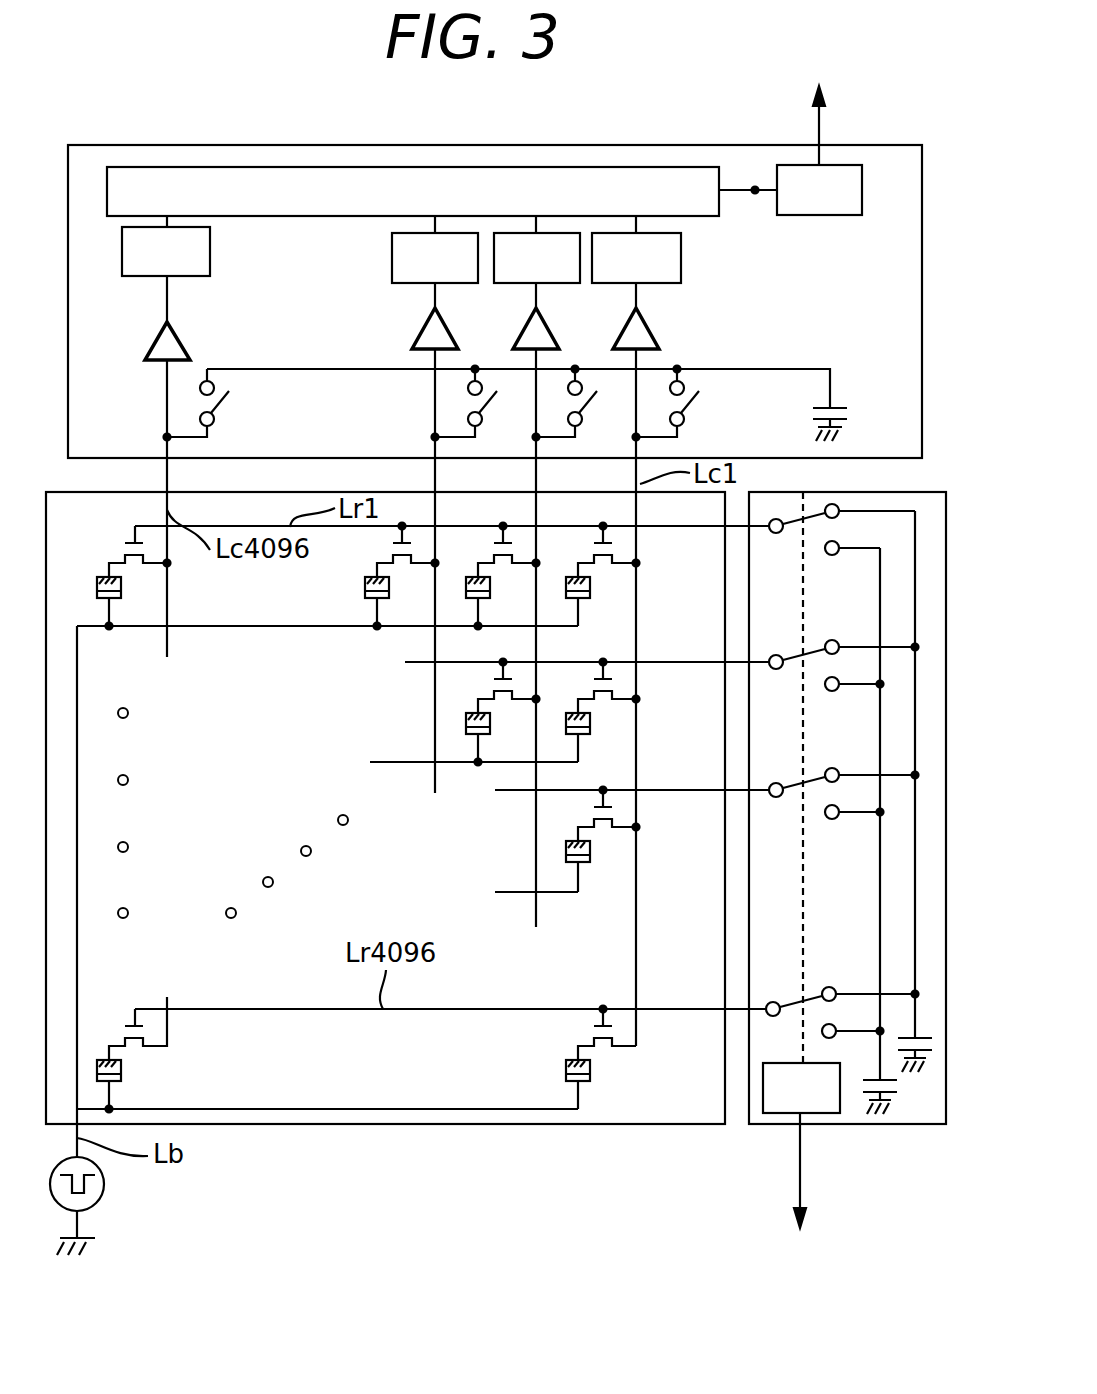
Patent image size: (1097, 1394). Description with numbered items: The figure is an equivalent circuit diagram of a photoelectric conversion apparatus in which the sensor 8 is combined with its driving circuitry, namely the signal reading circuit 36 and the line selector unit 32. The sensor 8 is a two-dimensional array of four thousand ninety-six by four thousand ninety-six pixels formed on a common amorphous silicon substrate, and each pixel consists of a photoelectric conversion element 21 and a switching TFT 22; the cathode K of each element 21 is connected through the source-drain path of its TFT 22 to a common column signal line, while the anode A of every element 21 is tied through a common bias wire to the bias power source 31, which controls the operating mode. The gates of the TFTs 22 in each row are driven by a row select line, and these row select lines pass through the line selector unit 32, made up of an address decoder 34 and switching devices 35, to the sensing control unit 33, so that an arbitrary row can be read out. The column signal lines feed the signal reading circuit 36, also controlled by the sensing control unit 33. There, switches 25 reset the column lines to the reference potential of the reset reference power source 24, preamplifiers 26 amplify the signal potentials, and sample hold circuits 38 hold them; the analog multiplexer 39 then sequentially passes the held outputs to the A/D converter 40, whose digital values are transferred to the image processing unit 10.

The sensor 8 is at (395, 1125).
The image processing unit 10 is at (833, 82).
The photoelectric conversion element 21 is at (102, 603).
The switching TFT 22 is at (140, 550).
The reset reference power source 24 is at (832, 405).
The switches 25 is at (225, 400).
The preamplifiers 26 is at (172, 345).
The bias power source 31 is at (104, 1183).
The line selector unit 32 is at (912, 1124).
The sensing control unit 33 is at (804, 1218).
The address decoder 34 is at (775, 1112).
The switching devices 35 is at (795, 1000).
The signal reading circuit 36 is at (388, 145).
The sample hold circuits 38 is at (210, 245).
The analog multiplexer 39 is at (292, 166).
The A/D converter 40 is at (830, 215).